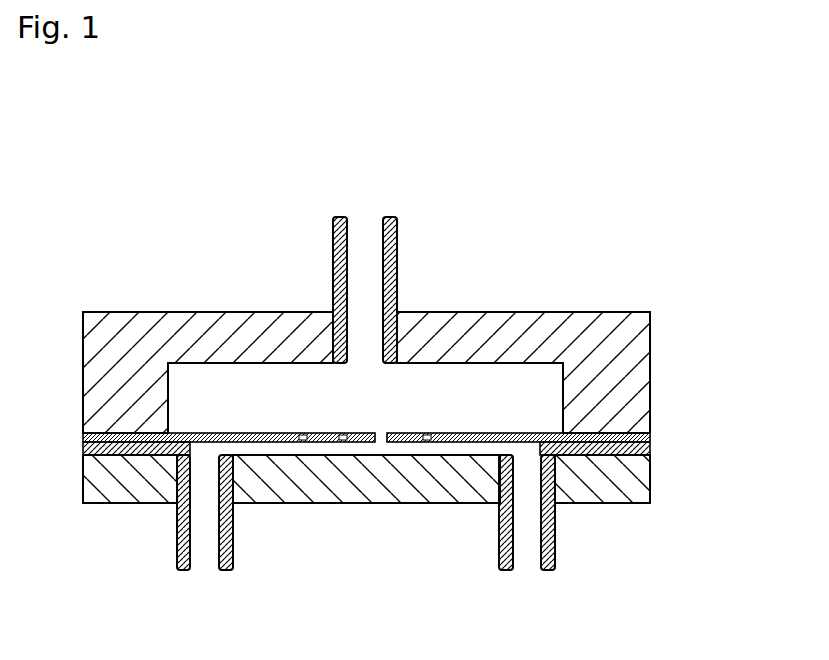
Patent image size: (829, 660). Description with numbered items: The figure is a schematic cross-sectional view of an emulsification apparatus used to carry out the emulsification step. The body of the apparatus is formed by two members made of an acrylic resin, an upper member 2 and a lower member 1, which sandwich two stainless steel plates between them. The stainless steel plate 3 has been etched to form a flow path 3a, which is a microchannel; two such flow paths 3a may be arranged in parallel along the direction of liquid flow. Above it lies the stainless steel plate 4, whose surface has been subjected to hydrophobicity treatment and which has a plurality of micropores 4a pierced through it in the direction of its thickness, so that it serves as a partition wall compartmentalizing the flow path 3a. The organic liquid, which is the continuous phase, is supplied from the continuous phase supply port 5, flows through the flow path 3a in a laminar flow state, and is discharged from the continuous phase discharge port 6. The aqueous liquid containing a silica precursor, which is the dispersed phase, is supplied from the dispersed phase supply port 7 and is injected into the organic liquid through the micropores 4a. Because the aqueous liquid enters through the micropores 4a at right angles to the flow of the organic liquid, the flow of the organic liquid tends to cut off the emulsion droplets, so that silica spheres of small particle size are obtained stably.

The member made of an acrylic resin 1 is at (652, 480).
The member made of an acrylic resin 2 is at (652, 328).
The stainless steel plate 3 is at (652, 445).
The flow path 3a is at (362, 446).
The stainless steel plate 4 is at (652, 437).
The micropores 4a is at (427, 435).
The continuous phase supply port 5 is at (234, 535).
The continuous phase discharge port 6 is at (556, 536).
The dispersed phase supply port 7 is at (398, 251).